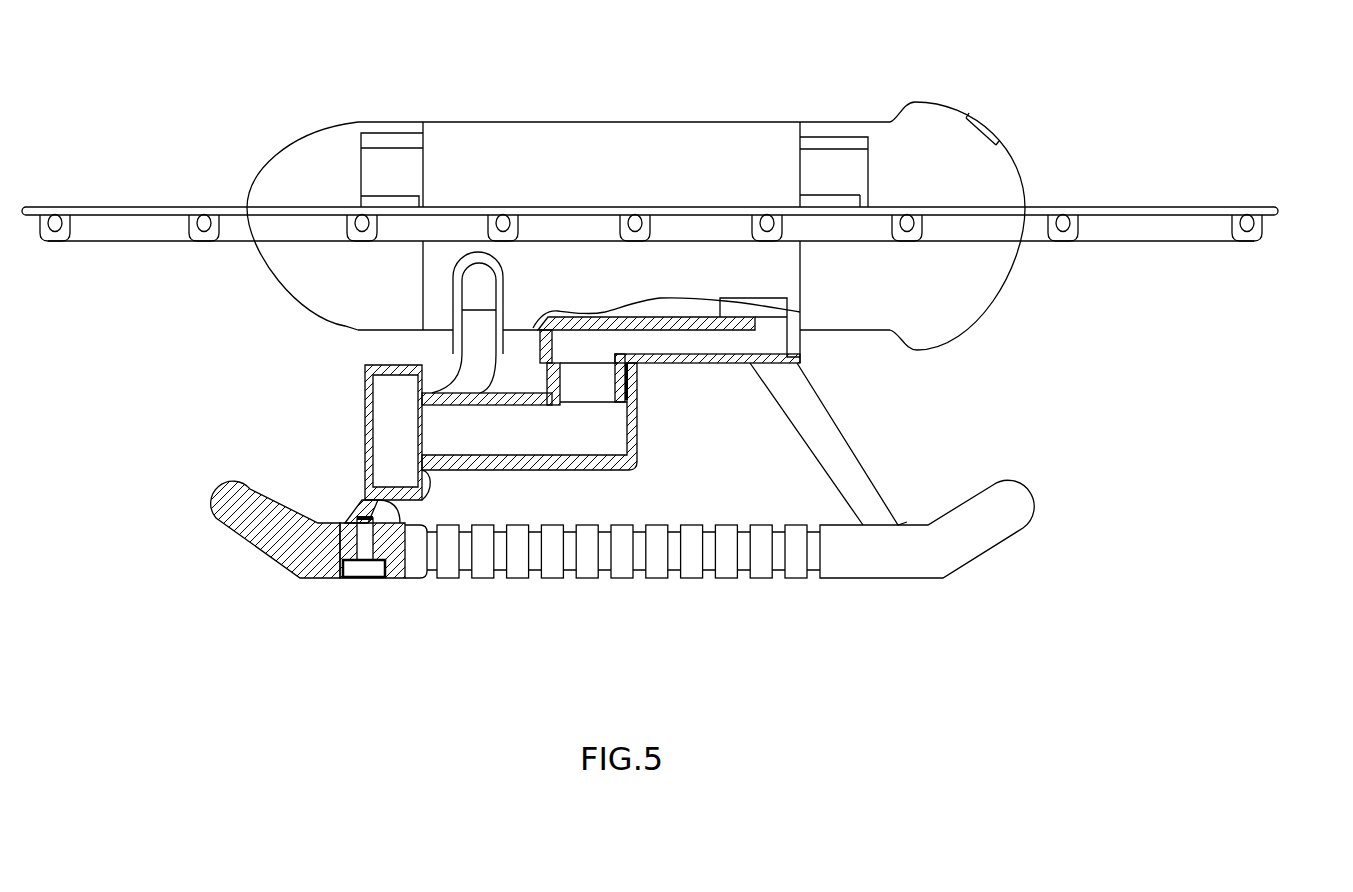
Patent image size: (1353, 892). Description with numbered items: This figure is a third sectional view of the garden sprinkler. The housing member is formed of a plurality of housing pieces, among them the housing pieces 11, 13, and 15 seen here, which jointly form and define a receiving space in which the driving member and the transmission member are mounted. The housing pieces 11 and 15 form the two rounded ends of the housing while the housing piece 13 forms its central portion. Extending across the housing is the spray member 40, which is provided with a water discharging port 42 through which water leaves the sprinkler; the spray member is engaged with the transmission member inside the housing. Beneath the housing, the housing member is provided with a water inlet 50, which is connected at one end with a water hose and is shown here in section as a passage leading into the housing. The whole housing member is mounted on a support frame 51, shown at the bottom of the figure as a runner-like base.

The housing piece 11 is at (937, 117).
The housing piece 13 is at (657, 135).
The housing piece 15 is at (315, 148).
The spray member 40 is at (676, 219).
The water discharging port 42 is at (1253, 230).
The water inlet 50 is at (633, 467).
The support frame 51 is at (880, 558).